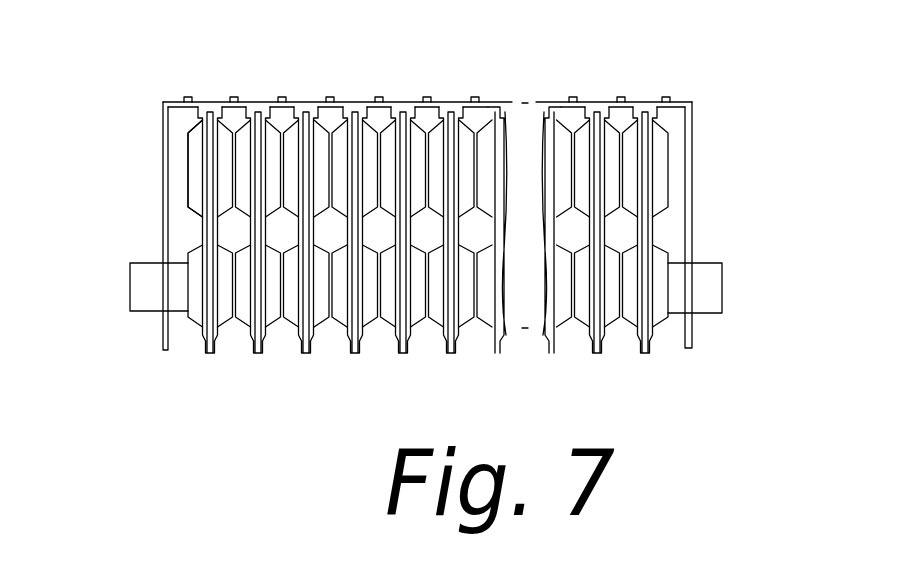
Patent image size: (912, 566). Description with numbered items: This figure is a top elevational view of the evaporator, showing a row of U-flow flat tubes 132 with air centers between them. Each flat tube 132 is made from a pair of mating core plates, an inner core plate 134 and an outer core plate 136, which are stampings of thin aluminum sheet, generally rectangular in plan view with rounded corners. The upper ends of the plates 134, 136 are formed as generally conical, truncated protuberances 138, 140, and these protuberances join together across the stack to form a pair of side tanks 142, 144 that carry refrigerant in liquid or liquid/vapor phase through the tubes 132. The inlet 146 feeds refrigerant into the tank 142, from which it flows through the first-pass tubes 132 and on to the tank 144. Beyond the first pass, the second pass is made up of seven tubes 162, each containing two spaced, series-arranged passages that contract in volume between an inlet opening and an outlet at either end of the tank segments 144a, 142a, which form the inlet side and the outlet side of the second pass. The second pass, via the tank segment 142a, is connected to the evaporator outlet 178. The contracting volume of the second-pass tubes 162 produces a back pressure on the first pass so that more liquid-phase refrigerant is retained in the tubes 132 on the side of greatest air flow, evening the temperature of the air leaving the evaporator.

The flat tube 132 is at (197, 123).
The inner core plate 134 is at (210, 190).
The outer core plate 136 is at (220, 223).
The protuberance 138 is at (247, 318).
The protuberance 140 is at (323, 118).
The side tank 142 is at (335, 336).
The tank segment 142a is at (612, 320).
The side tank 144 is at (370, 140).
The tank segment 144a is at (563, 138).
The inlet 146 is at (140, 297).
The tube 162 is at (652, 168).
The evaporator outlet 178 is at (712, 292).